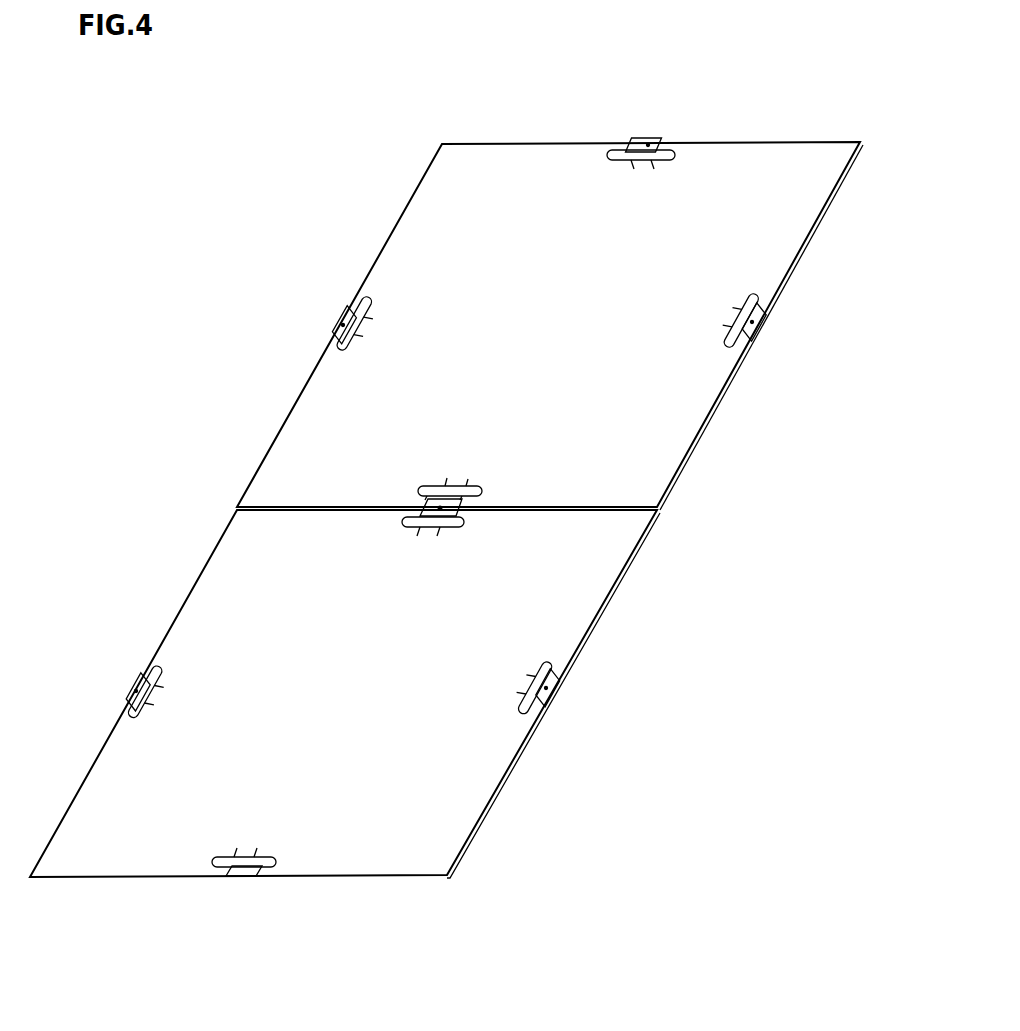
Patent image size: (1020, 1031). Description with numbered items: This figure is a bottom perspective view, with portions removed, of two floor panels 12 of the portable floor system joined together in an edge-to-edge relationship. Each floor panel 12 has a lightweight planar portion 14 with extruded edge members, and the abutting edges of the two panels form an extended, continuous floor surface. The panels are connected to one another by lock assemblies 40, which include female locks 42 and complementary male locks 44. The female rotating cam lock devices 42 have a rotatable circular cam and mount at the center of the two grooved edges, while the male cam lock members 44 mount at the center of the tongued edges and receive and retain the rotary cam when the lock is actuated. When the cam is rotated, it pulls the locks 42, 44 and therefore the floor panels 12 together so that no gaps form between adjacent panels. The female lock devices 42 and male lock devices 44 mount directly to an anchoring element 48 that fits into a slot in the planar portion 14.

The floor panel 12 is at (146, 531).
The planar portion 14 is at (545, 326).
The lock assembly 40 is at (492, 464).
The female lock 42 is at (655, 143).
The male lock 44 is at (760, 318).
The anchoring element 48 is at (665, 155).